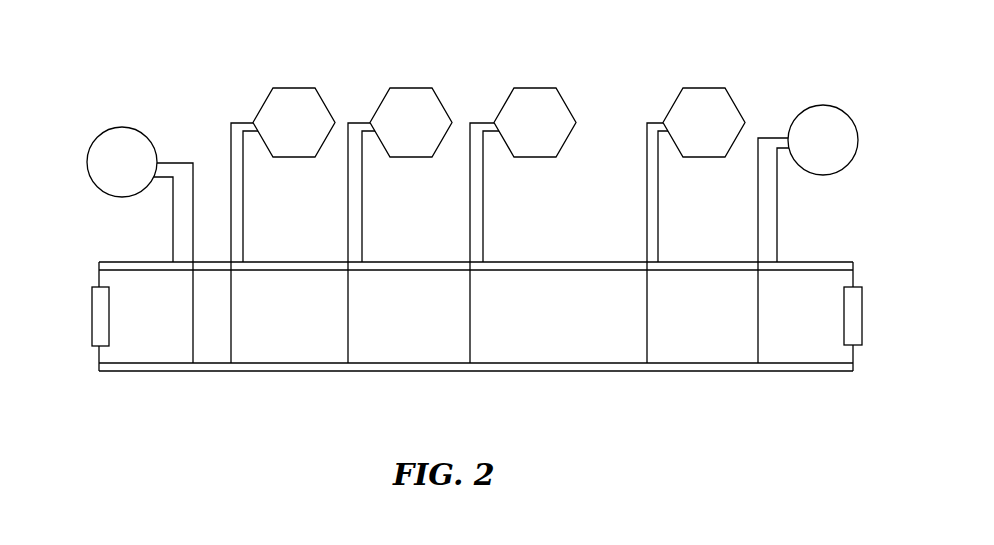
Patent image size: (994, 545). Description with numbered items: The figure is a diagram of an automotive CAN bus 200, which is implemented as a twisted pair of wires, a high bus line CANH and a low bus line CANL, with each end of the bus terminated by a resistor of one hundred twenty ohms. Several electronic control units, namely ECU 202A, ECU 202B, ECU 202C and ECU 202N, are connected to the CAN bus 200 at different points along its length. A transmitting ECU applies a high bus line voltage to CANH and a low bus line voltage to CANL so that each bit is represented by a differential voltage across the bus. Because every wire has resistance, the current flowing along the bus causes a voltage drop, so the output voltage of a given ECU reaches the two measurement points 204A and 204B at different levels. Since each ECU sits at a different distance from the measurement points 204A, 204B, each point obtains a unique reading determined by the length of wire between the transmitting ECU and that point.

The CAN bus 200 is at (853, 262).
The ECU 202A is at (293, 88).
The ECU 202B is at (410, 88).
The ECU 202C is at (534, 88).
The ECU 202N is at (704, 88).
The measurement point 204A is at (137, 128).
The measurement point 204B is at (835, 107).